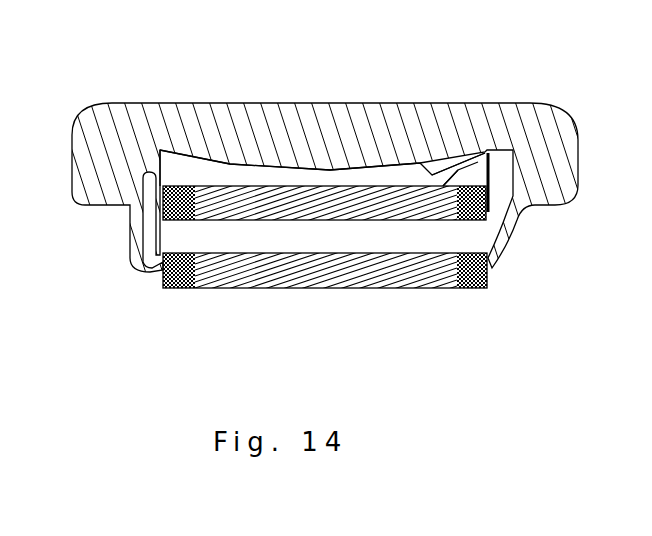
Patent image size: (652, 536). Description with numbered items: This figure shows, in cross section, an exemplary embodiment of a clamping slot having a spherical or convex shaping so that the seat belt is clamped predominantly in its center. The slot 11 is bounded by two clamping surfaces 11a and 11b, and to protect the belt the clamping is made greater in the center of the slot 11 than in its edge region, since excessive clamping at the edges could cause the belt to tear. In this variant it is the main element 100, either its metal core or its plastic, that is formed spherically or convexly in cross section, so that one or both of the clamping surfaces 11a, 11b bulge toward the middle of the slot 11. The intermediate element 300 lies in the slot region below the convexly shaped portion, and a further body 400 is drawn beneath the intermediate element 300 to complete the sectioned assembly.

The main element 100 is at (303, 128).
The slot 11 is at (222, 168).
The clamping surface 11a is at (432, 175).
The clamping surface 11b is at (458, 170).
The intermediate element 300 is at (270, 200).
The lower body 400 is at (342, 268).